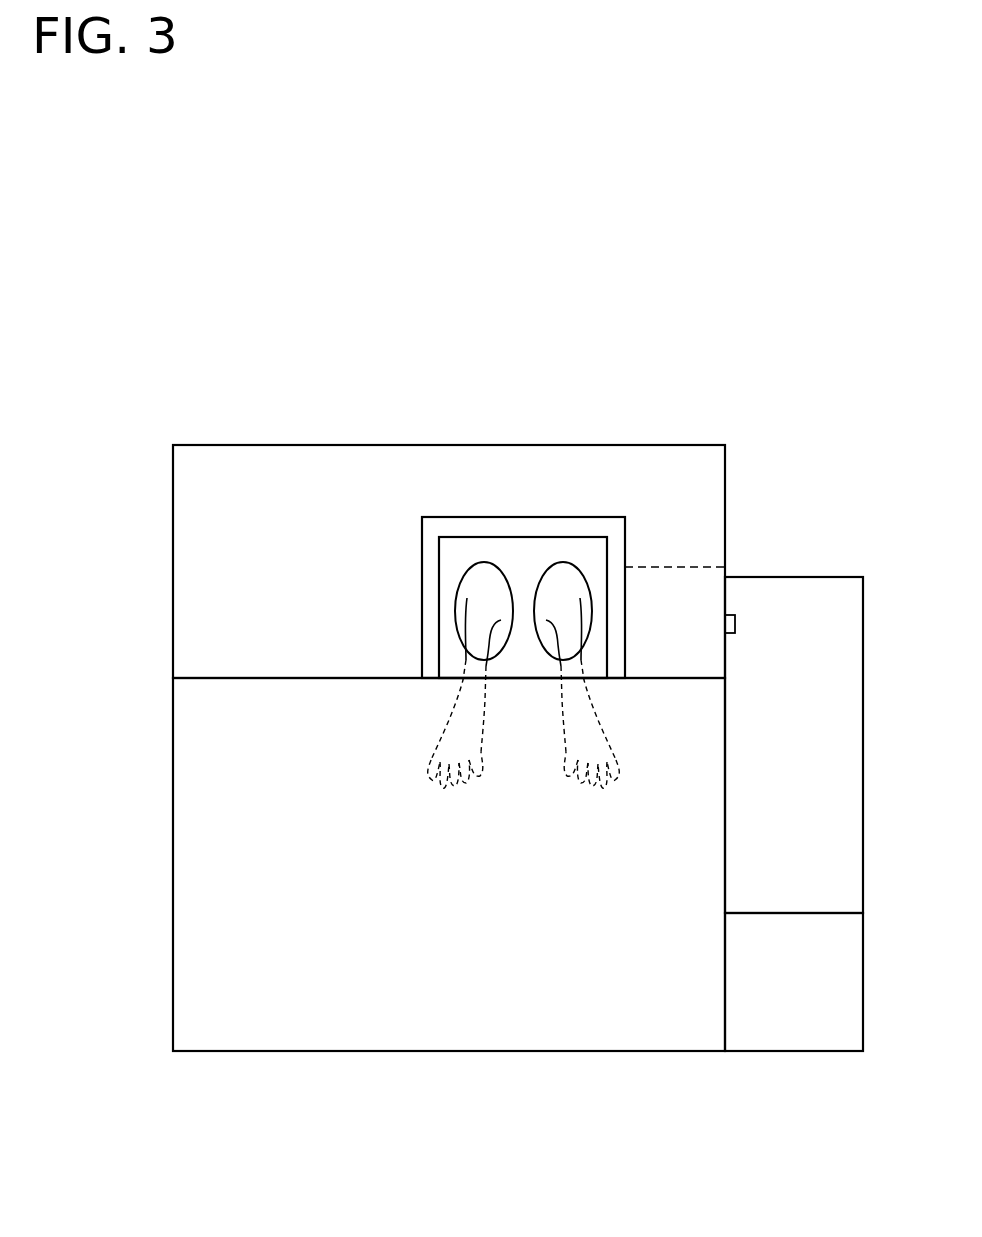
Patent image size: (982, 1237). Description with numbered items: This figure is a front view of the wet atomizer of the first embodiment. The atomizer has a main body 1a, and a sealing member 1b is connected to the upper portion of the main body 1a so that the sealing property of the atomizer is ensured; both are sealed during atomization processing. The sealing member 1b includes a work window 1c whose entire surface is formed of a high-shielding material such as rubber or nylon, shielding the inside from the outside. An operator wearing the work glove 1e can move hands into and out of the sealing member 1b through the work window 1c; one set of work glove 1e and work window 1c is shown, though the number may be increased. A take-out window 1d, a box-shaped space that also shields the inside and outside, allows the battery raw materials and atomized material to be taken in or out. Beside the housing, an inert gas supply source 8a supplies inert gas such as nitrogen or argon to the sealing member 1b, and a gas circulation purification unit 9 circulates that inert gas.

The main body 1a is at (213, 908).
The sealing member 1b is at (213, 568).
The work window 1c is at (430, 543).
The take-out window 1d is at (700, 588).
The work glove 1e is at (453, 790).
The gas circulation purification unit 9 is at (828, 843).
The inert gas supply source 8a is at (828, 988).